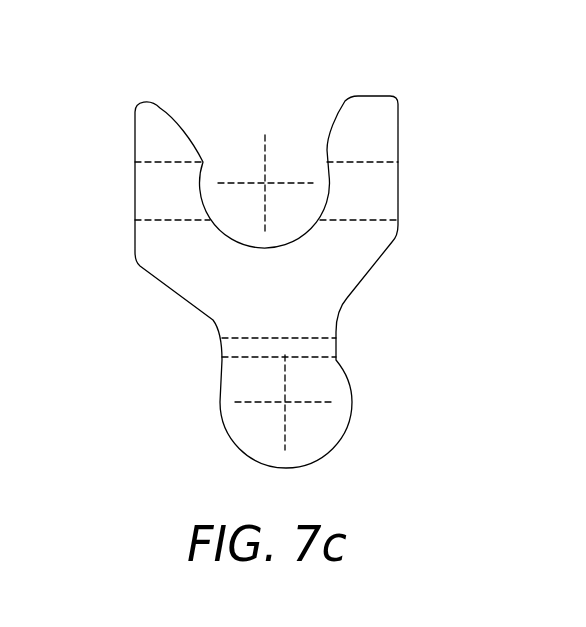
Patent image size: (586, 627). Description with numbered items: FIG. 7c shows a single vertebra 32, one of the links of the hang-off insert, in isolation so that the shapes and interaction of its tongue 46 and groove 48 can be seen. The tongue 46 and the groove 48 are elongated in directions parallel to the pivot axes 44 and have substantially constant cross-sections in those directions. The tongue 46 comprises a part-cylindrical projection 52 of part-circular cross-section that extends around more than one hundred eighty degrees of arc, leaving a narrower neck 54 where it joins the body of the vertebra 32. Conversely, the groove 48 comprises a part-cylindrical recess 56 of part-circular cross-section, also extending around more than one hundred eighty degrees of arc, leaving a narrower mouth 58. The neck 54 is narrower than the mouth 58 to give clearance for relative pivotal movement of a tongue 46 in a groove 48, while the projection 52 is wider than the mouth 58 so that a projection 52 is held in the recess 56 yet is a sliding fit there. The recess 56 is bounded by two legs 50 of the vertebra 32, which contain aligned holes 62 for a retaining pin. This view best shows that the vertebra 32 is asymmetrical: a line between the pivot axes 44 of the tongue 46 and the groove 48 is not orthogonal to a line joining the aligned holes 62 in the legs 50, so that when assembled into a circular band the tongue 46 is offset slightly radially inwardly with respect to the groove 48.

The vertebra 32 is at (388, 335).
The pivot axis 44 is at (267, 184).
The tongue 46 is at (224, 437).
The groove 48 is at (290, 138).
The leg 50 is at (150, 116).
The part-cylindrical projection 52 is at (221, 392).
The neck 54 is at (218, 325).
The part-cylindrical recess 56 is at (227, 206).
The mouth 58 is at (204, 161).
The hole 62 is at (389, 189).